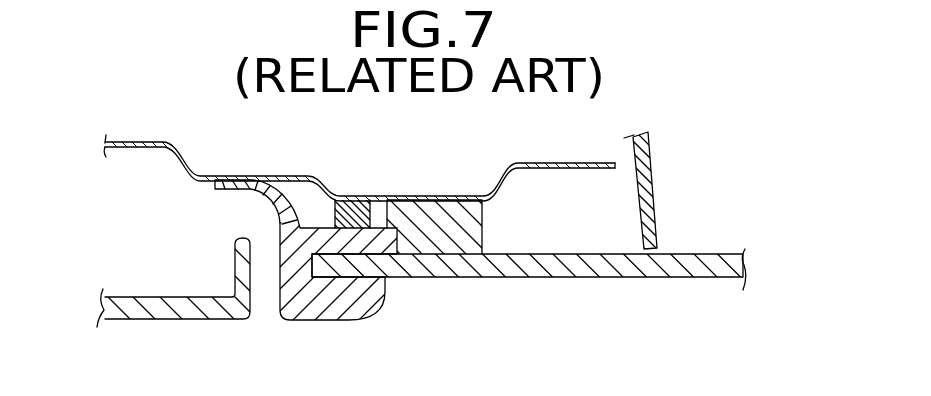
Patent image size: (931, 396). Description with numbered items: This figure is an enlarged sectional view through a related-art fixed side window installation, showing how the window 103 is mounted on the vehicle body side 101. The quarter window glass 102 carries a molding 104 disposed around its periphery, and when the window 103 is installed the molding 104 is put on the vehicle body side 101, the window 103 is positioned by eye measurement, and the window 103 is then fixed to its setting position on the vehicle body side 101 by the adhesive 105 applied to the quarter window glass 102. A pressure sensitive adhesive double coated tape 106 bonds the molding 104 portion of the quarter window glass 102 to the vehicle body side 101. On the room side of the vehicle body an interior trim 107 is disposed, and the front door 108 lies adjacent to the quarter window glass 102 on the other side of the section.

The vehicle body side 101 is at (558, 170).
The quarter window glass 102 is at (695, 273).
The window 103 is at (562, 282).
The molding 104 is at (351, 313).
The adhesive 105 is at (493, 217).
The pressure sensitive adhesive double coated tape 106 is at (354, 212).
The interior trim 107 is at (656, 190).
The front door 108 is at (218, 319).